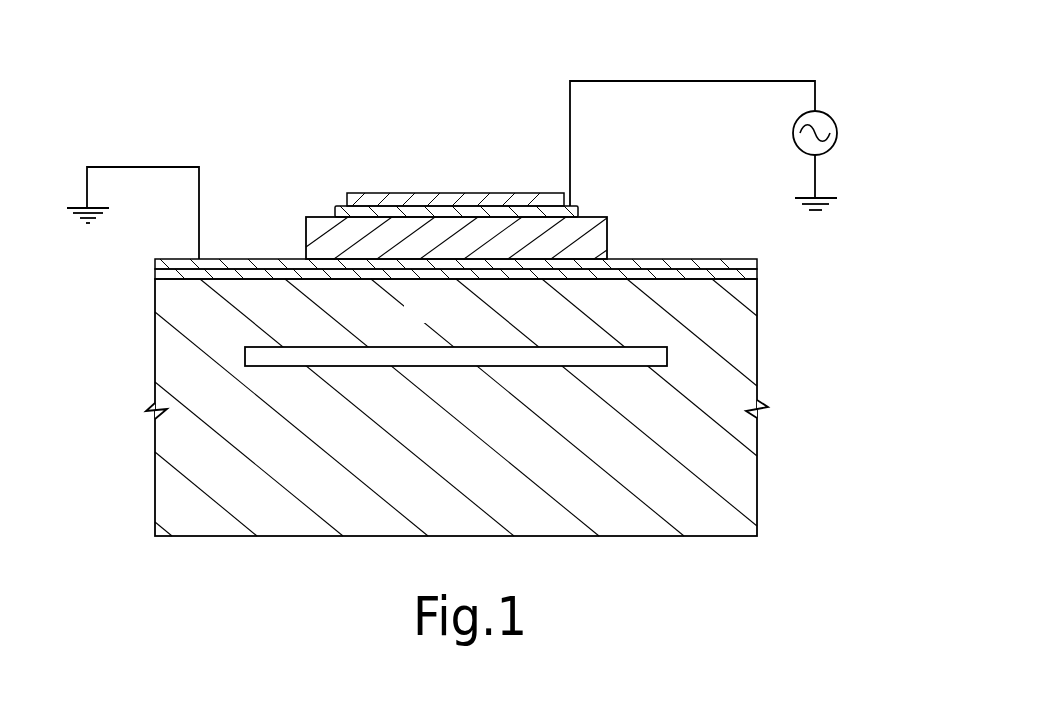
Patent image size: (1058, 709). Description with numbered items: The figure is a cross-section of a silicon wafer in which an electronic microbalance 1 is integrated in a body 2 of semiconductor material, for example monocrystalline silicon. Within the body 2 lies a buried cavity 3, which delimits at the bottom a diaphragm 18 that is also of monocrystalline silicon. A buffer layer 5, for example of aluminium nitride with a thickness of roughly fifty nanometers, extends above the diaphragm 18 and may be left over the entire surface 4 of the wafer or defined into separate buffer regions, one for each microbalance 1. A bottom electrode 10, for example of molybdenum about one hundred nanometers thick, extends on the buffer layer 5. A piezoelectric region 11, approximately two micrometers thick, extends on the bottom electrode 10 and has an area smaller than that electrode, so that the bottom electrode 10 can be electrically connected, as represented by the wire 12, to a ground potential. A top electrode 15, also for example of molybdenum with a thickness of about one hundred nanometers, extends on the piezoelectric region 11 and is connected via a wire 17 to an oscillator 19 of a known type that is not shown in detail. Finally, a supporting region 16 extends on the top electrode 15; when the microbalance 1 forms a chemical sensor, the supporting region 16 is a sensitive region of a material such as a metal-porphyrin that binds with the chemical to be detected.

The microbalance 1 is at (833, 324).
The body 2 is at (706, 520).
The buried cavity 3 is at (603, 358).
The surface 4 is at (741, 270).
The buffer layer 5 is at (256, 277).
The bottom electrode 10 is at (216, 266).
The piezoelectric region 11 is at (600, 228).
The wire 12 is at (177, 166).
The top electrode 15 is at (337, 212).
The supporting region 16 is at (442, 193).
The wire 17 is at (570, 115).
The diaphragm 18 is at (434, 324).
The oscillator 19 is at (836, 127).